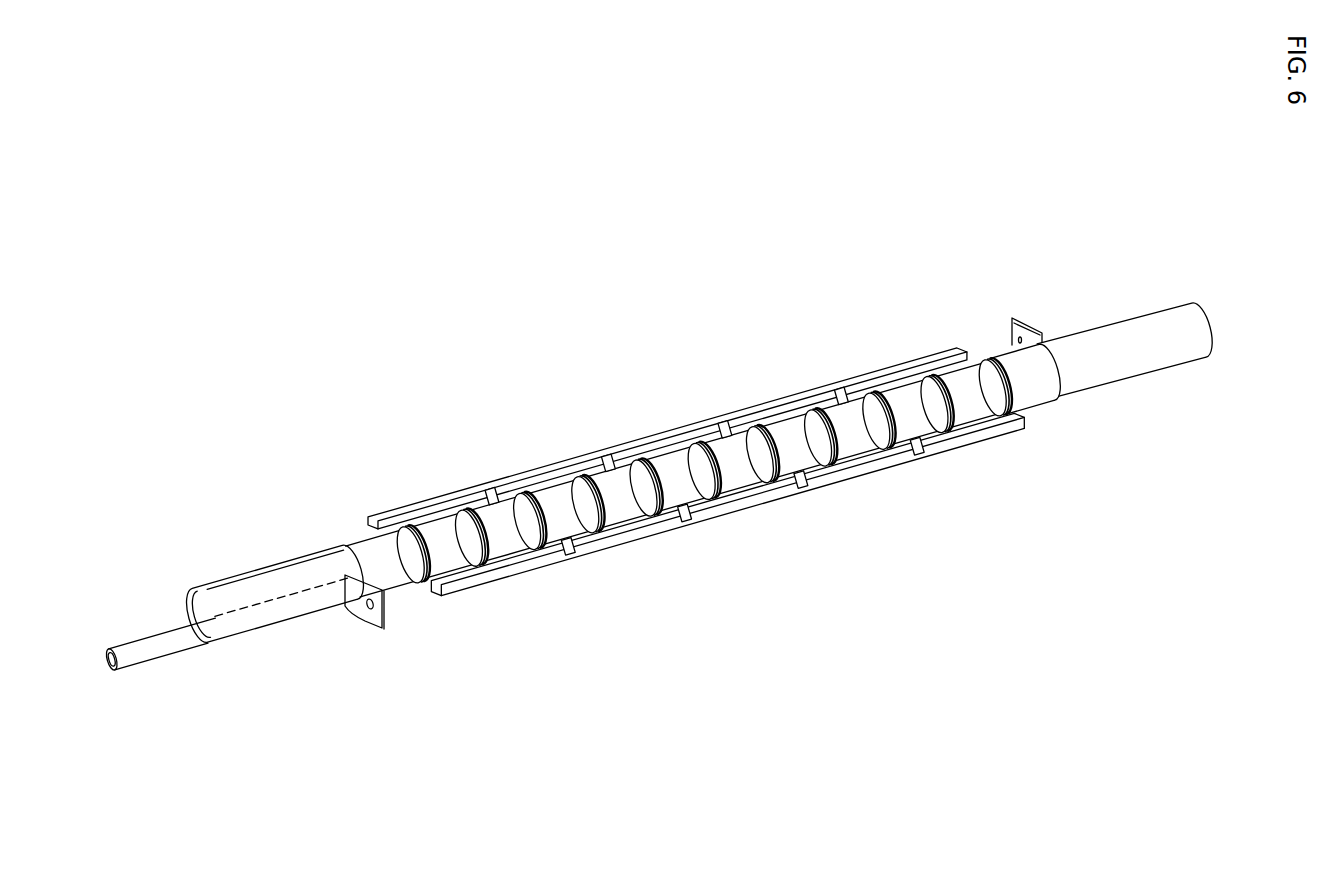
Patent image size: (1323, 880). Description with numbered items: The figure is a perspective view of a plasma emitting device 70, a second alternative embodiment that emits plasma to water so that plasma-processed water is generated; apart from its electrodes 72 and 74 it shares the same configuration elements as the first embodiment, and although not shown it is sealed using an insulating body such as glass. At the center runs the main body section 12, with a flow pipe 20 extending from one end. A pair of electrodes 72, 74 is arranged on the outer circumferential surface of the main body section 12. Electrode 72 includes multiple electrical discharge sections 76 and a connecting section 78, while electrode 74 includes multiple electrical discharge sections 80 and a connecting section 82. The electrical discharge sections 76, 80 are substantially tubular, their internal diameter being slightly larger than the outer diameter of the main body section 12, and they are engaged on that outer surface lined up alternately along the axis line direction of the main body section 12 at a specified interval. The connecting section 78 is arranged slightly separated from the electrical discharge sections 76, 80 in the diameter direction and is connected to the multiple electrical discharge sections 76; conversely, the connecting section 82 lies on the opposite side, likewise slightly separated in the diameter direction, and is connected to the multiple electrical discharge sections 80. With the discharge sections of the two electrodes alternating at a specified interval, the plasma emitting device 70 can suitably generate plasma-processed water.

The main body section 12 is at (1155, 340).
The flow pipe 20 is at (162, 647).
The plasma emitting device 70 is at (628, 243).
The electrode 72 is at (410, 482).
The electrode 74 is at (884, 486).
The electrical discharge sections 76 is at (513, 503).
The connecting section 78 is at (892, 367).
The electrical discharge sections 80 is at (562, 518).
The connecting section 82 is at (972, 442).